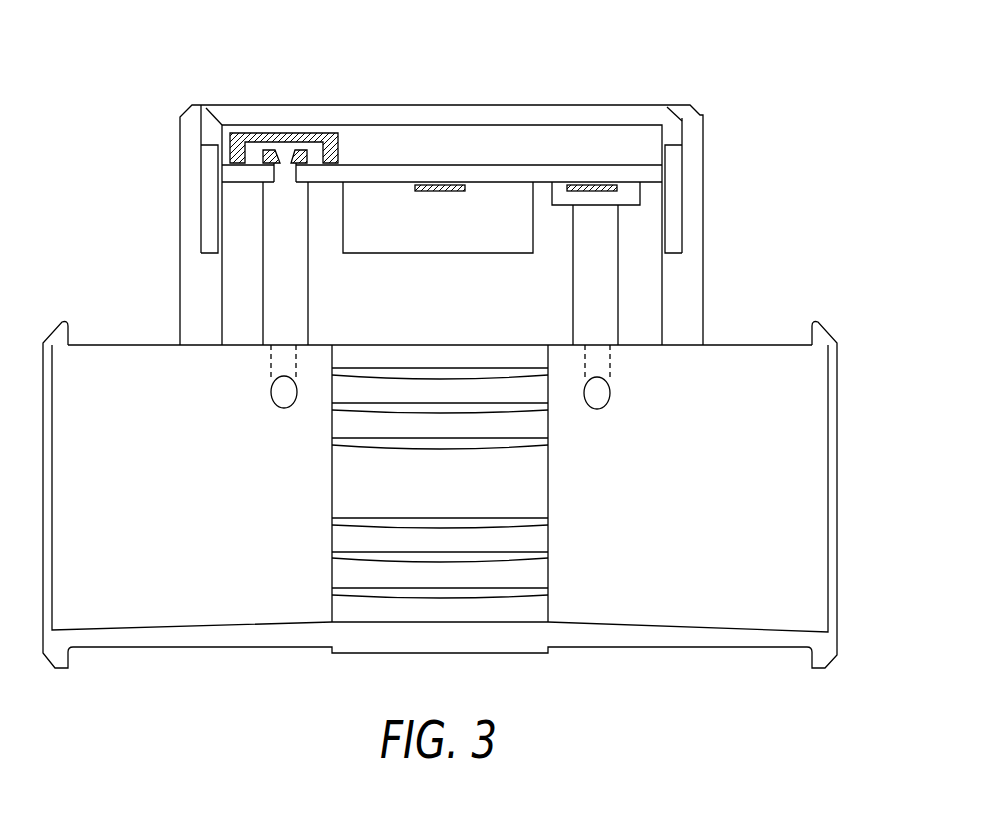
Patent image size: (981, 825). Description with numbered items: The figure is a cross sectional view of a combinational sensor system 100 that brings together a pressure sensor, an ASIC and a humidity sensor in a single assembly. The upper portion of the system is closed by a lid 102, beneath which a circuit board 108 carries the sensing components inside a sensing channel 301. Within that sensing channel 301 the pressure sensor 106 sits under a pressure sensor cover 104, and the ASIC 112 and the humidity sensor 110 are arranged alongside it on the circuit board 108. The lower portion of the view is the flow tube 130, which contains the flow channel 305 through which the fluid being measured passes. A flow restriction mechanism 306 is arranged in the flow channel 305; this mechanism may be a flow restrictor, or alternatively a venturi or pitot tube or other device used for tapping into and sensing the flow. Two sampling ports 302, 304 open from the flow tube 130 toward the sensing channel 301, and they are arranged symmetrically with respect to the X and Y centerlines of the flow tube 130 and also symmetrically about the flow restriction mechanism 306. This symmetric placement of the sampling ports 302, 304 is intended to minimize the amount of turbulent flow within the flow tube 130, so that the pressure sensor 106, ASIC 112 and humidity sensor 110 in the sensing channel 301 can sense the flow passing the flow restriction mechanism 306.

The combinational sensor system 100 is at (764, 55).
The lid 102 is at (188, 108).
The pressure sensor cover 104 is at (263, 134).
The pressure sensor 106 is at (298, 150).
The circuit board 108 is at (237, 172).
The humidity sensor 110 is at (597, 185).
The ASIC 112 is at (452, 185).
The flow tube 130 is at (538, 195).
The sensing channel 301 is at (595, 233).
The sampling port 302 is at (283, 392).
The sampling port 304 is at (597, 393).
The flow channel 305 is at (708, 528).
The flow restriction mechanism 306 is at (550, 483).